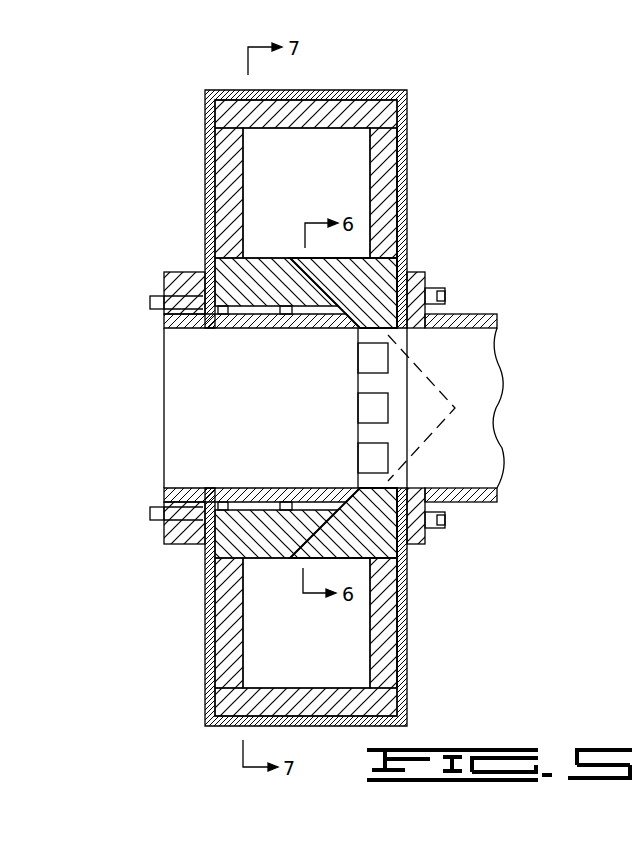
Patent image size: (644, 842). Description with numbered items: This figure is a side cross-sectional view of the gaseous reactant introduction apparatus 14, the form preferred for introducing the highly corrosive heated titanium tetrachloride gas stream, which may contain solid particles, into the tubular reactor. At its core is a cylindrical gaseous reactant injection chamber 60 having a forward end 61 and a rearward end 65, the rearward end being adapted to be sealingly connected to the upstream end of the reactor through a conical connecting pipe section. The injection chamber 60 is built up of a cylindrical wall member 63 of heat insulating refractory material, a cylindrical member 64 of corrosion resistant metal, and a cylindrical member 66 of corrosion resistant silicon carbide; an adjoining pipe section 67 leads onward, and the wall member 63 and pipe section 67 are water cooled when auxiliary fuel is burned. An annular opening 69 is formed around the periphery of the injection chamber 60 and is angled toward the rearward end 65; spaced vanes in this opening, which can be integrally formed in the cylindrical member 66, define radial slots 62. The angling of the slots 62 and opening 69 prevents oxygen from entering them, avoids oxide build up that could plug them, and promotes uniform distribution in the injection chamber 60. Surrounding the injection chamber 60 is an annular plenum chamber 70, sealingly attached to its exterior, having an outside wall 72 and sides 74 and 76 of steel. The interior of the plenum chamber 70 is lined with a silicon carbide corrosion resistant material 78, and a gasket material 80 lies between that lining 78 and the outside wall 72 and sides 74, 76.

The gaseous reactant introduction apparatus 14 is at (300, 382).
The cylindrical gaseous reactant injection chamber 60 is at (176, 264).
The forward end 61 is at (160, 304).
The radial slots 62 is at (288, 257).
The cylindrical wall member 63 is at (243, 330).
The cylindrical member 64 is at (413, 329).
The rearward end 65 is at (428, 311).
The cylindrical member 66 is at (408, 260).
The pipe section 67 is at (452, 488).
The annular opening 69 is at (357, 338).
The annular plenum chamber 70 is at (413, 116).
The outside wall 72 is at (312, 91).
The side 74 is at (203, 152).
The side 76 is at (409, 184).
The silicon carbide corrosion resistant material 78 is at (370, 163).
The gasket material 80 is at (403, 155).